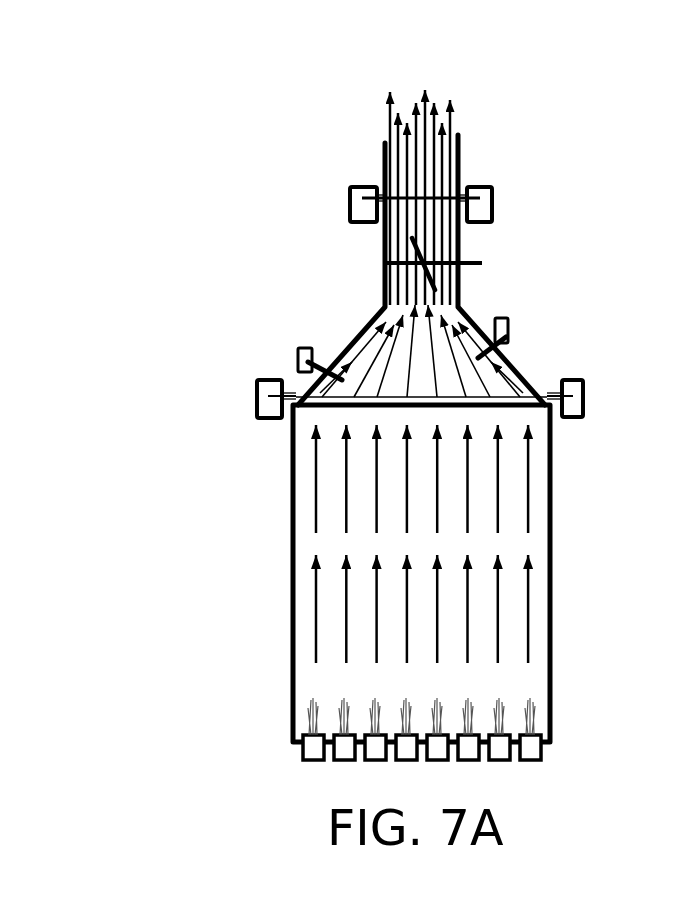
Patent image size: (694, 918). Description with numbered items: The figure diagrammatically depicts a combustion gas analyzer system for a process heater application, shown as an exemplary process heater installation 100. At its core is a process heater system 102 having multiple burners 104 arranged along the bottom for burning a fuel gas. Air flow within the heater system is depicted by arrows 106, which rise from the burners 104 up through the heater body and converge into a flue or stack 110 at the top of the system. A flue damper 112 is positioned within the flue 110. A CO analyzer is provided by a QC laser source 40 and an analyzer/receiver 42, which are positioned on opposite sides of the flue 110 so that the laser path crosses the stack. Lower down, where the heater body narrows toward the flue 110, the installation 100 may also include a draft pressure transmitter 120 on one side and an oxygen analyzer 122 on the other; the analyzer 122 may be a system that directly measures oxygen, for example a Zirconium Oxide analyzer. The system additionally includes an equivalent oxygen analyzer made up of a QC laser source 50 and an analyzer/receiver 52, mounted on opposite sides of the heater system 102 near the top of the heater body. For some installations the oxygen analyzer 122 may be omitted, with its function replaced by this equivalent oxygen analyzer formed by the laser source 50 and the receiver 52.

The process heater installation 100 is at (186, 287).
The QC laser source 40 is at (366, 187).
The analyzer/receiver 42 is at (478, 187).
The flue 110 is at (383, 238).
The flue damper 112 is at (413, 256).
The draft pressure transmitter 120 is at (305, 348).
The oxygen analyzer 122 is at (501, 318).
The QC laser source 50 is at (257, 393).
The analyzer/receiver 52 is at (573, 418).
The process heater system 102 is at (292, 517).
The arrows 106 is at (316, 612).
The burners 104 is at (303, 752).